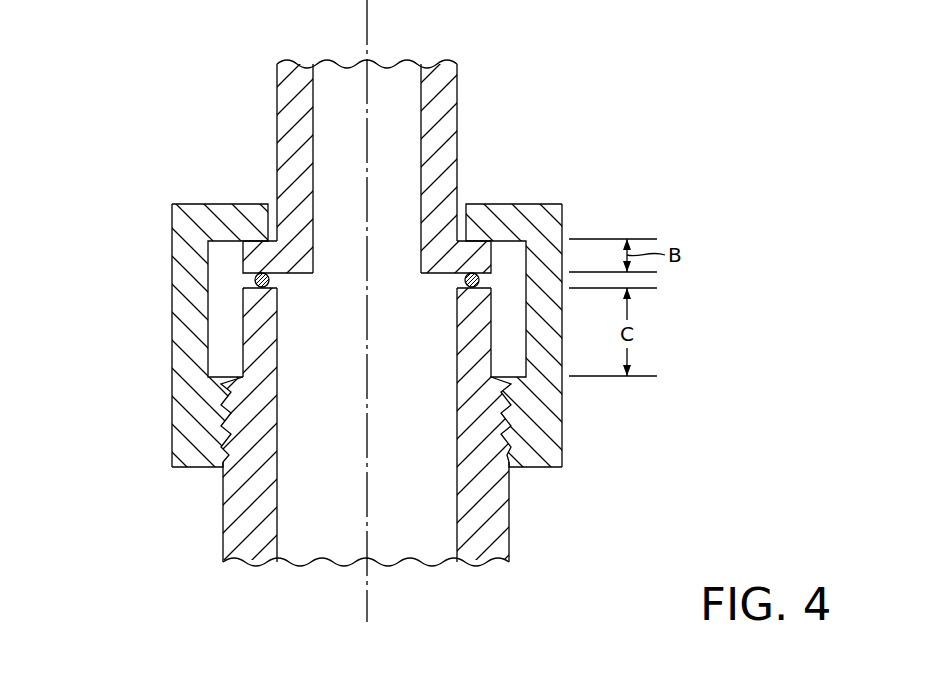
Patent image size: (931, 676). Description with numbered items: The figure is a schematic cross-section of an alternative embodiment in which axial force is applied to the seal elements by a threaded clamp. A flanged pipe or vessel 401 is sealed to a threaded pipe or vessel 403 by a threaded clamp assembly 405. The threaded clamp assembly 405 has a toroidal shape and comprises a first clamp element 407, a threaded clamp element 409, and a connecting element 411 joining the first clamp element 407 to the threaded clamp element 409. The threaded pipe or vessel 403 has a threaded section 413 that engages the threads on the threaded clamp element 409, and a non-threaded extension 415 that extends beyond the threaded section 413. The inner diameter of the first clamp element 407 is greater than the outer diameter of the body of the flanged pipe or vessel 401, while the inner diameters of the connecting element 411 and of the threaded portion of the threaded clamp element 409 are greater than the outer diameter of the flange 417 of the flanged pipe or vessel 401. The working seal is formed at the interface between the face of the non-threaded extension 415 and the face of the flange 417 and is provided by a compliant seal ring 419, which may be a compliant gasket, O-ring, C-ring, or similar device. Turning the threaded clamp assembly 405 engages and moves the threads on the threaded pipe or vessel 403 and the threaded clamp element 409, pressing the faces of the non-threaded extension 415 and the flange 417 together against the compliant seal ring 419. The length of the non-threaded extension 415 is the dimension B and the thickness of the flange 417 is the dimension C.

The flanged pipe or vessel 401 is at (277, 102).
The threaded pipe or vessel 403 is at (223, 533).
The threaded clamp assembly 405 is at (527, 146).
The first clamp element 407 is at (217, 218).
The threaded clamp element 409 is at (195, 452).
The connecting element 411 is at (185, 370).
The threaded section 413 is at (217, 426).
The non-threaded extension 415 is at (257, 328).
The flange 417 is at (257, 260).
The compliant seal ring 419 is at (253, 283).